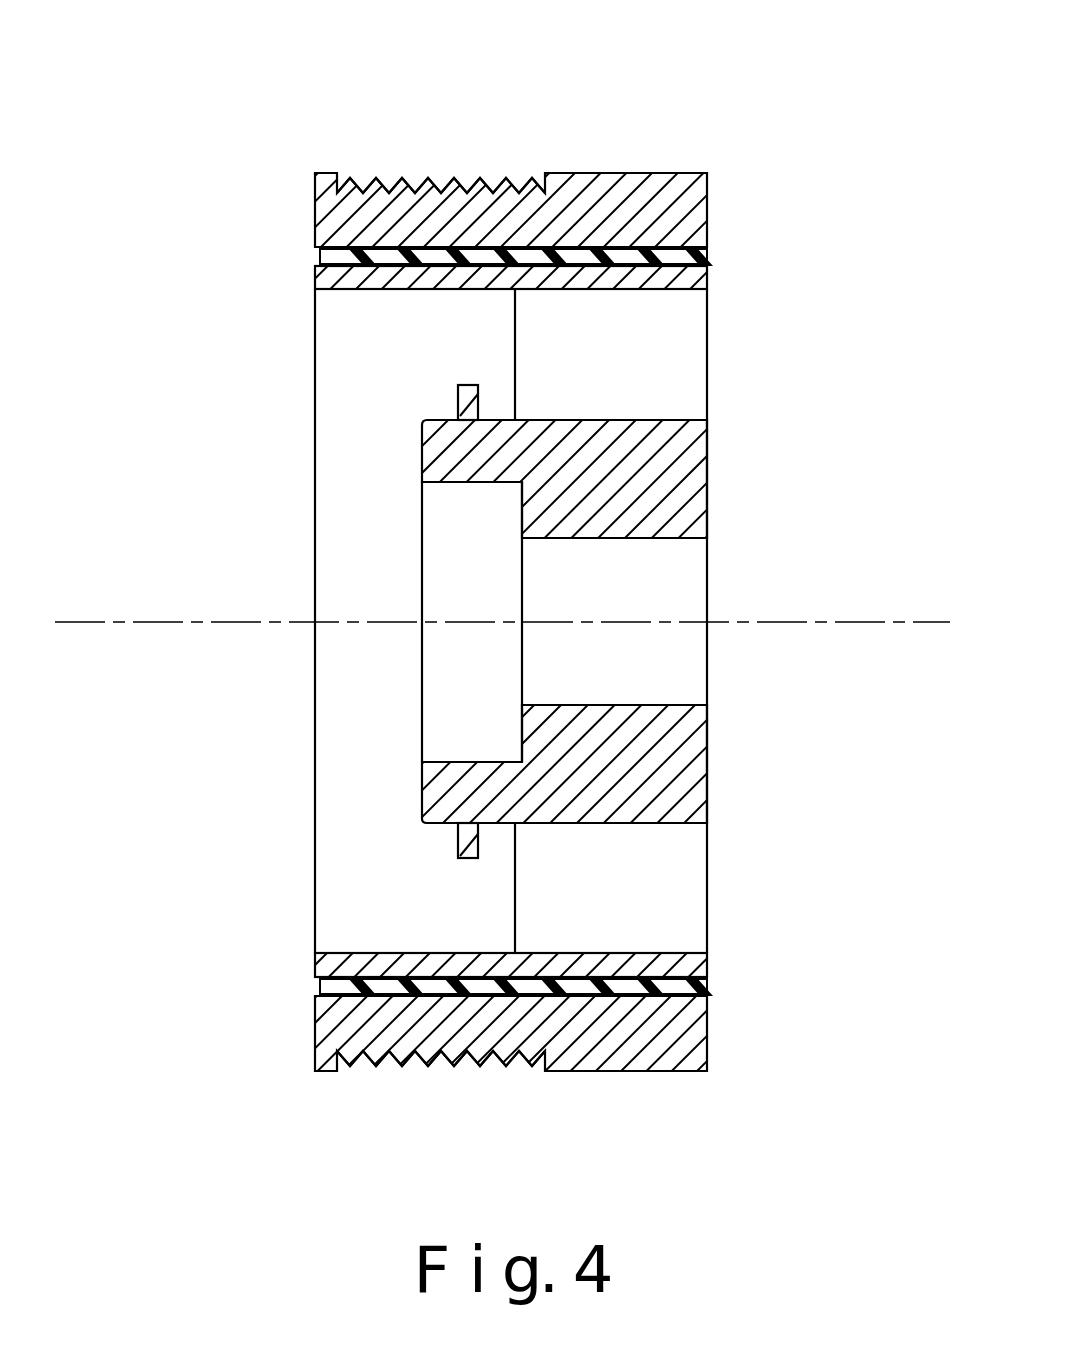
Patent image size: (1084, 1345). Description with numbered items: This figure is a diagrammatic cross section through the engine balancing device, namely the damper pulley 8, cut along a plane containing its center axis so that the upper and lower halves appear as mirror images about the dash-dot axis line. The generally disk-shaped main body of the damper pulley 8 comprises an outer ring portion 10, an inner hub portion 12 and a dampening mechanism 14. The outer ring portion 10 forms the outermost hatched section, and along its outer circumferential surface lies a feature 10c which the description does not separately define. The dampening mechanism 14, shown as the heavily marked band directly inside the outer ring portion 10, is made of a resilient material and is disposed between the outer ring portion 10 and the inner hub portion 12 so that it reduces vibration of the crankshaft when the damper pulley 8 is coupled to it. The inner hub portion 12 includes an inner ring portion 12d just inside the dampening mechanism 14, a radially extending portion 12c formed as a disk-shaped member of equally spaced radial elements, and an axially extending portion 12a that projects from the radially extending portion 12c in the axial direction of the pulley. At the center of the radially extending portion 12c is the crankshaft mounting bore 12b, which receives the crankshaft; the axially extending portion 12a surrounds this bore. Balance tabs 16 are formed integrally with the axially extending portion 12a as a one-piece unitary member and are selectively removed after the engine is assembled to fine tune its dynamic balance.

The damper pulley 8 is at (235, 135).
The outer ring portion 10 is at (712, 145).
The serrated teeth 10c is at (463, 182).
The inner hub portion 12 is at (723, 370).
The axially extending portion 12a is at (473, 455).
The crankshaft mounting bore 12b is at (558, 675).
The radially extending portion 12c is at (620, 892).
The inner ring portion 12d is at (362, 922).
The dampening mechanism 14 is at (335, 260).
The balance tabs 16 is at (458, 400).